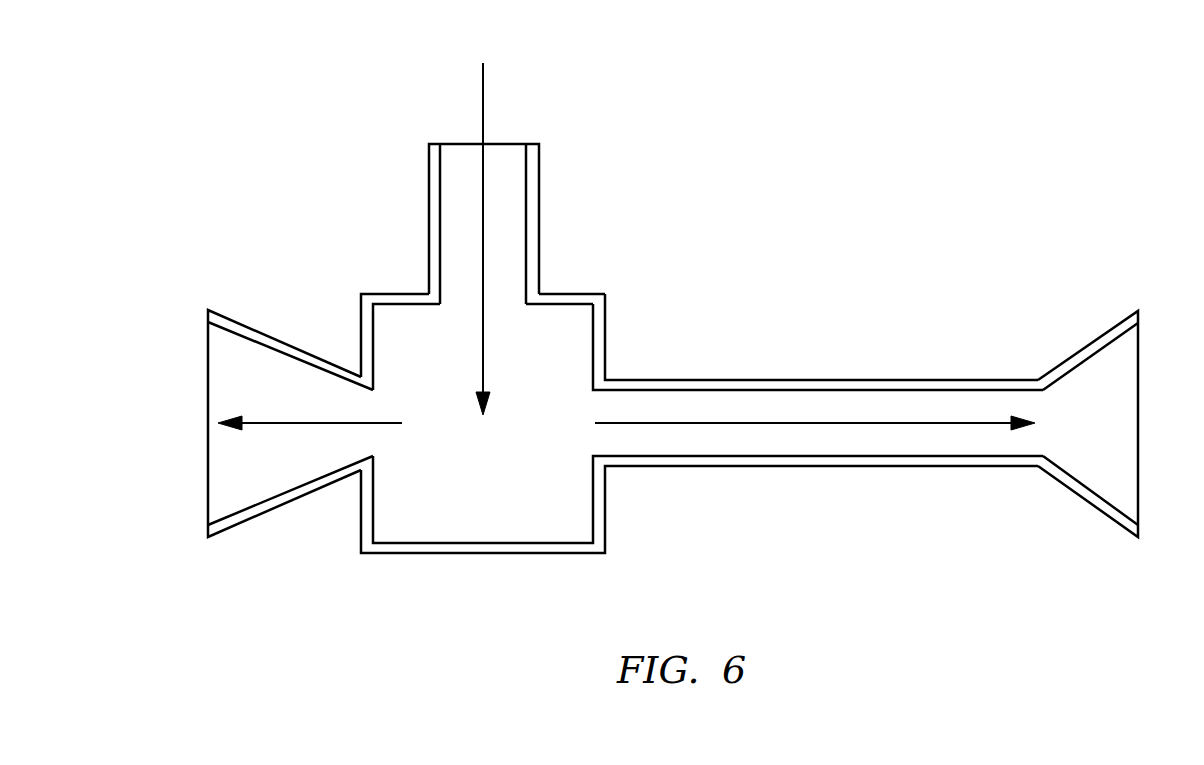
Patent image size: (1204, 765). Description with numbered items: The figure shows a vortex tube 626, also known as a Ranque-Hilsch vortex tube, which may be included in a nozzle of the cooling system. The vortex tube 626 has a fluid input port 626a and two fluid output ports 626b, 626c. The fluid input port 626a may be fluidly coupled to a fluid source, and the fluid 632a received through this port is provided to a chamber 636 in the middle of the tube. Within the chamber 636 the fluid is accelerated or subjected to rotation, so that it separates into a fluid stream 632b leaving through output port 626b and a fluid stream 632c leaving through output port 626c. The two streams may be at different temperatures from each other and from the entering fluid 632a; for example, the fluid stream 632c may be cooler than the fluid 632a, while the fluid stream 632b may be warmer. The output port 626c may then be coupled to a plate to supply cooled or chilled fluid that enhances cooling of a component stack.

The vortex tube 626 is at (946, 155).
The fluid input port 626a is at (513, 202).
The fluid output port 626b is at (1097, 365).
The fluid output port 626c is at (232, 352).
The fluid 632a is at (483, 100).
The fluid stream 632b is at (855, 422).
The fluid stream 632c is at (306, 423).
The chamber 636 is at (580, 512).